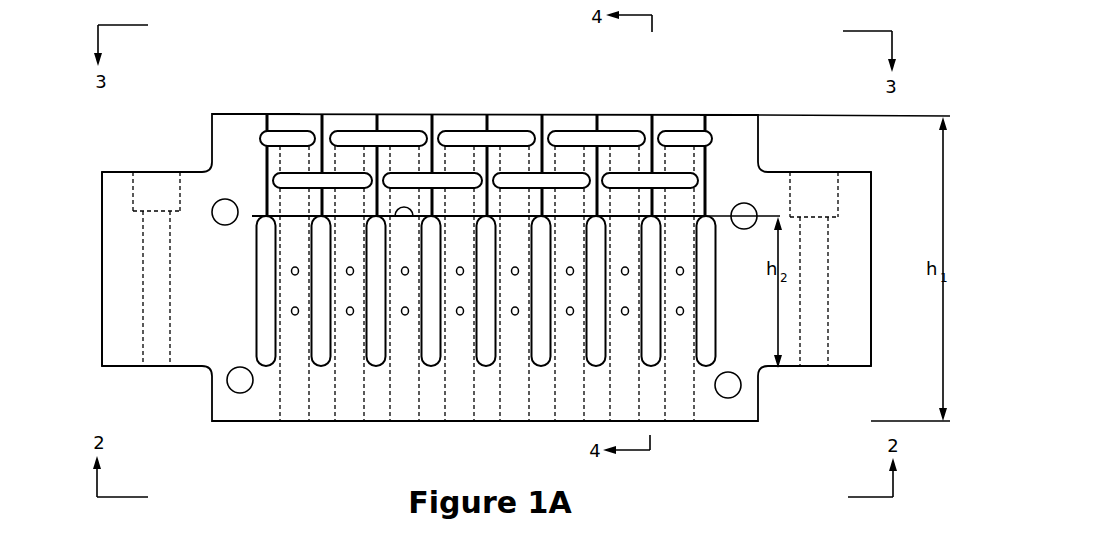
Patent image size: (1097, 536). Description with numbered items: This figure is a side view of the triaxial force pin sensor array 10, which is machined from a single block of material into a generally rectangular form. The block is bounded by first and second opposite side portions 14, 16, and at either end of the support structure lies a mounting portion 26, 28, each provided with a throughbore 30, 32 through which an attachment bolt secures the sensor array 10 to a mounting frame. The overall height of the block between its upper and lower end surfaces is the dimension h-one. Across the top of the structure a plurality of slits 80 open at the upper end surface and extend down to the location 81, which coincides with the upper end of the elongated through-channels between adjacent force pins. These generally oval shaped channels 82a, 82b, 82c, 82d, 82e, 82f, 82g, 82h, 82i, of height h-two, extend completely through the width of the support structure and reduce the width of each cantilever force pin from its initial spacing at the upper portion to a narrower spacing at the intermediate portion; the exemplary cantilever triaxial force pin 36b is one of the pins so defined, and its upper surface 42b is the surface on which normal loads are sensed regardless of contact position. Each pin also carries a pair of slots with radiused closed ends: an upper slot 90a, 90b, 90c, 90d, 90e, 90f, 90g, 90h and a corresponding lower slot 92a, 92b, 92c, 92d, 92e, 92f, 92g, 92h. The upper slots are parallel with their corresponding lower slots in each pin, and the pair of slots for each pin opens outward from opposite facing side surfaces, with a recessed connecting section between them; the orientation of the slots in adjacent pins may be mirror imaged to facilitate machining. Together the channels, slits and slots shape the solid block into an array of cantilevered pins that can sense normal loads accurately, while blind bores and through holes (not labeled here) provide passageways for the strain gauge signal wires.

The triaxial force pin sensor array 10 is at (818, 113).
The first side portion 14 is at (757, 332).
The second side portion 16 is at (233, 147).
The mounting portion 26 is at (845, 238).
The mounting portion 28 is at (118, 223).
The throughbore 30 is at (827, 273).
The throughbore 32 is at (145, 308).
The cantilever triaxial force pin 36b is at (628, 352).
The upper surface 42b is at (623, 130).
The slits 80 is at (383, 190).
The location 81 is at (413, 216).
The oval shaped channel 82a is at (716, 268).
The oval shaped channel 82b is at (658, 335).
The oval shaped channel 82c is at (585, 328).
The oval shaped channel 82d is at (531, 323).
The oval shaped channel 82e is at (477, 322).
The oval shaped channel 82f is at (420, 313).
The oval shaped channel 82g is at (367, 313).
The oval shaped channel 82h is at (312, 293).
The oval shaped channel 82i is at (257, 283).
The upper slot 90a is at (668, 131).
The upper slot 90b is at (612, 130).
The upper slot 90c is at (553, 130).
The upper slot 90d is at (500, 130).
The upper slot 90e is at (447, 130).
The upper slot 90f is at (390, 130).
The upper slot 90g is at (332, 130).
The upper slot 90h is at (283, 130).
The lower slot 92a is at (673, 173).
The lower slot 92b is at (648, 130).
The lower slot 92c is at (570, 173).
The lower slot 92d is at (533, 130).
The lower slot 92e is at (455, 172).
The lower slot 92f is at (422, 130).
The lower slot 92g is at (345, 173).
The lower slot 92h is at (313, 130).